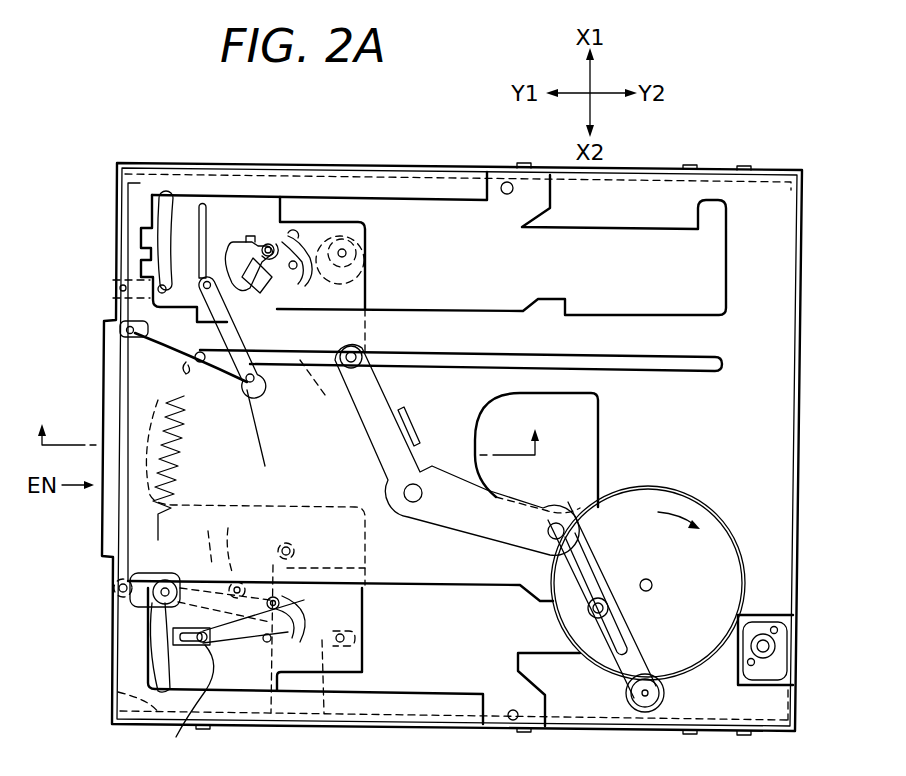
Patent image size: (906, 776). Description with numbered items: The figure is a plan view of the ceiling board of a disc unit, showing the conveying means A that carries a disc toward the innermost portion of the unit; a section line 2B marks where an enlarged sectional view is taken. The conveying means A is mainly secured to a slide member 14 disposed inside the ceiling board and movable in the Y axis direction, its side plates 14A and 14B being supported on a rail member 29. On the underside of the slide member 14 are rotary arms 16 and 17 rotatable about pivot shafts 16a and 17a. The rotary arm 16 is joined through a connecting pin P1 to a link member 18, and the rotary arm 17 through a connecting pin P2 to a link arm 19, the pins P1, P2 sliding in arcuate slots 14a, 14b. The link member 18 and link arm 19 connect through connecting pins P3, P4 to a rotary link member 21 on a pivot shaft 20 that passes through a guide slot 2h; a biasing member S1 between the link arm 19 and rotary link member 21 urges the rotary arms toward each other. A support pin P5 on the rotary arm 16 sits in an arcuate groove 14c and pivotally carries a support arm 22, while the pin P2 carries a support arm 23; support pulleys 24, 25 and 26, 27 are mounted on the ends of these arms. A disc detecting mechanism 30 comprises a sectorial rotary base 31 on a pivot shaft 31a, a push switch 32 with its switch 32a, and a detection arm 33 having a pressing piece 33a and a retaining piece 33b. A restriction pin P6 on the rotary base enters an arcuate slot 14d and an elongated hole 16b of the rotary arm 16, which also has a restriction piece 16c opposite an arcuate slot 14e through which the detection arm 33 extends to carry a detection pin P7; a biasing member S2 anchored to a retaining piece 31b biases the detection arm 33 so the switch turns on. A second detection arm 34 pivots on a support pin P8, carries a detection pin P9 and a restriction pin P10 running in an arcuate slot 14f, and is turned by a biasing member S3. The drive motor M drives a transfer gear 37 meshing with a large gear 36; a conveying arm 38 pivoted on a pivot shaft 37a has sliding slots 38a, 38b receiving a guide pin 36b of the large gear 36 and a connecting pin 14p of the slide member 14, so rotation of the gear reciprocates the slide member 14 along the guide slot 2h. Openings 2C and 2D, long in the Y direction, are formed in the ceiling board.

The slide member 14 is at (367, 223).
The side plate 14A is at (125, 184).
The side plate 14B is at (140, 695).
The arcuate slot 14a is at (172, 207).
The arcuate slot 14b is at (158, 648).
The arcuate groove 14c is at (152, 255).
The arcuate slot 14d is at (300, 235).
The arcuate slot 14e is at (300, 275).
The arcuate slot 14f is at (305, 630).
The connecting pin 14p is at (362, 357).
The rotary arm 16 is at (372, 232).
The pivot shaft 16a is at (348, 253).
The elongated hole 16b is at (303, 248).
The restriction piece 16c is at (365, 300).
The rotary arm 17 is at (322, 700).
The pivot shaft 17a is at (346, 638).
The link member 18 is at (236, 400).
The link arm 19 is at (135, 365).
The pivot shaft 20 is at (207, 386).
The rotary link member 21 is at (186, 368).
The support arm 22 is at (152, 211).
The support arm 23 is at (224, 565).
The support pulley 24 is at (123, 290).
The support pulley 25 is at (170, 194).
The support pulley 26 is at (118, 588).
The support pulley 27 is at (238, 542).
The rail member 29 is at (506, 182).
The disc detecting mechanism 30 is at (231, 232).
The rotary base 31 is at (242, 237).
The pivot shaft 31a is at (283, 262).
The retaining piece 31b is at (252, 234).
The push switch 32 is at (268, 243).
The switch 32a is at (265, 468).
The detection arm 33 is at (272, 375).
The pressing piece 33a is at (300, 293).
The retaining piece 33b is at (310, 282).
The detection arm 34 is at (366, 568).
The large gear 36 is at (685, 488).
The guide pin 36b is at (615, 650).
The transfer gear 37 is at (652, 690).
The pivot shaft 37a is at (643, 697).
The conveying arm 38 is at (465, 520).
The sliding slot 38a is at (606, 622).
The sliding slot 38b is at (395, 434).
The drive motor M is at (765, 686).
The biasing member S1 is at (178, 470).
The biasing member S2 is at (270, 244).
The biasing member S3 is at (185, 701).
The connecting pin P1 is at (208, 283).
The connecting pin P2 is at (167, 588).
The connecting pin P3 is at (254, 390).
The connecting pin P4 is at (126, 330).
The support pin P5 is at (160, 290).
The restriction pin P6 is at (346, 283).
The detection pin P7 is at (317, 398).
The support pin P8 is at (263, 642).
The detection pin P9 is at (296, 550).
The restriction pin P10 is at (271, 597).
The conveying means A is at (396, 391).
The line 2B— 2B is at (314, 450).
The opening 2C is at (643, 315).
The opening 2D is at (436, 590).
The guide slot 2h is at (552, 358).